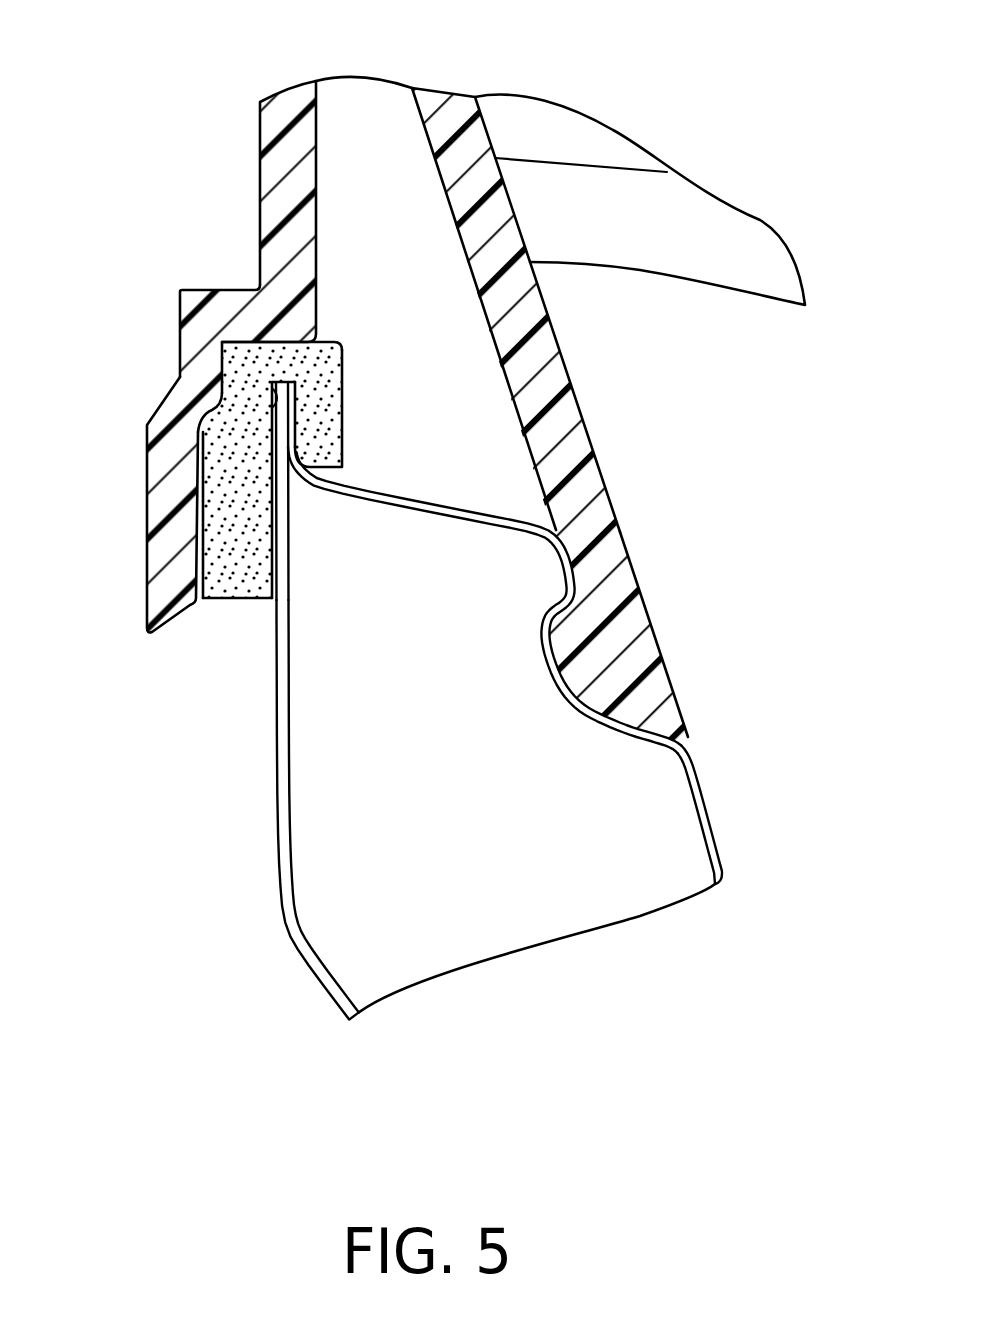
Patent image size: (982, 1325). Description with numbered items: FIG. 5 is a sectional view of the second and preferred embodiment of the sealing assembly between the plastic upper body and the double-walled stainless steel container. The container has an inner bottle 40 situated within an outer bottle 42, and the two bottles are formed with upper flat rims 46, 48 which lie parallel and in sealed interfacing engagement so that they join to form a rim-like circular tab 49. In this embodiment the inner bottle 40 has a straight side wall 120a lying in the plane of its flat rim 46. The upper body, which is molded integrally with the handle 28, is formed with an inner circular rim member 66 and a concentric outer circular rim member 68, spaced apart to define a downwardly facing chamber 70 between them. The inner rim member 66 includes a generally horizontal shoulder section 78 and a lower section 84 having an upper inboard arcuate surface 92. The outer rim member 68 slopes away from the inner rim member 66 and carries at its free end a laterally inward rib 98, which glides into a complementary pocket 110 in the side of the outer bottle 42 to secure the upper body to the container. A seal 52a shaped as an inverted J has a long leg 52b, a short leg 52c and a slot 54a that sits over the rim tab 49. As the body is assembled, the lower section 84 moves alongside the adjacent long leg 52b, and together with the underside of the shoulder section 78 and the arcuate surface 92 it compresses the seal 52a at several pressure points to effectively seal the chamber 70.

The handle 28 is at (684, 155).
The inner bottle 40 is at (315, 987).
The outer bottle 42 is at (723, 866).
The flat rim 46 is at (274, 436).
The flat rim 48 is at (282, 377).
The rim-like circular tab 49 is at (322, 396).
The seal 52a is at (237, 616).
The long leg 52b is at (216, 502).
The short leg 52c is at (330, 432).
The slot 54a is at (236, 362).
The inner circular rim member 66 is at (230, 134).
The outer circular rim member 68 is at (462, 78).
The chamber 70 is at (352, 140).
The shoulder section 78 is at (222, 312).
The lower section 84 is at (162, 565).
The upper inboard arcuate surface 92 is at (205, 418).
The rib 98 is at (593, 667).
The pocket 110 is at (557, 643).
The straight side wall 120a is at (277, 818).